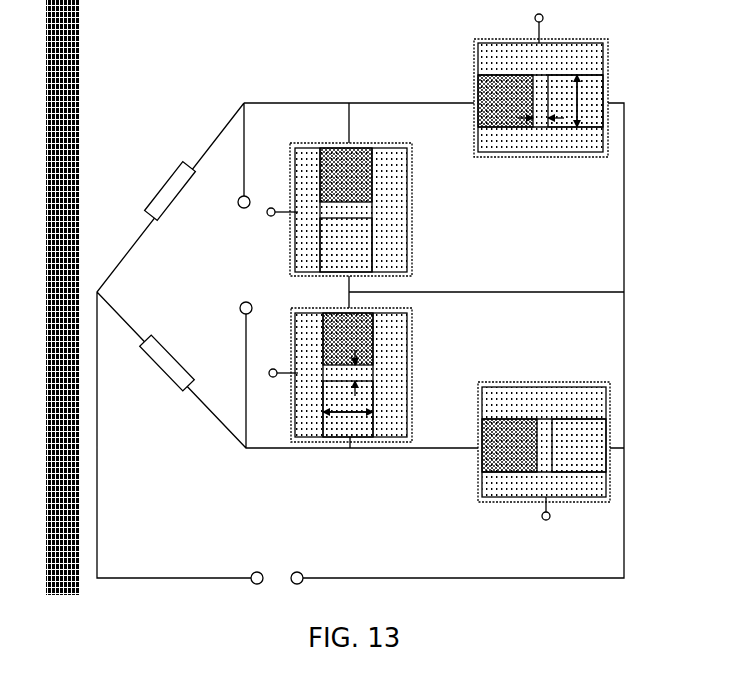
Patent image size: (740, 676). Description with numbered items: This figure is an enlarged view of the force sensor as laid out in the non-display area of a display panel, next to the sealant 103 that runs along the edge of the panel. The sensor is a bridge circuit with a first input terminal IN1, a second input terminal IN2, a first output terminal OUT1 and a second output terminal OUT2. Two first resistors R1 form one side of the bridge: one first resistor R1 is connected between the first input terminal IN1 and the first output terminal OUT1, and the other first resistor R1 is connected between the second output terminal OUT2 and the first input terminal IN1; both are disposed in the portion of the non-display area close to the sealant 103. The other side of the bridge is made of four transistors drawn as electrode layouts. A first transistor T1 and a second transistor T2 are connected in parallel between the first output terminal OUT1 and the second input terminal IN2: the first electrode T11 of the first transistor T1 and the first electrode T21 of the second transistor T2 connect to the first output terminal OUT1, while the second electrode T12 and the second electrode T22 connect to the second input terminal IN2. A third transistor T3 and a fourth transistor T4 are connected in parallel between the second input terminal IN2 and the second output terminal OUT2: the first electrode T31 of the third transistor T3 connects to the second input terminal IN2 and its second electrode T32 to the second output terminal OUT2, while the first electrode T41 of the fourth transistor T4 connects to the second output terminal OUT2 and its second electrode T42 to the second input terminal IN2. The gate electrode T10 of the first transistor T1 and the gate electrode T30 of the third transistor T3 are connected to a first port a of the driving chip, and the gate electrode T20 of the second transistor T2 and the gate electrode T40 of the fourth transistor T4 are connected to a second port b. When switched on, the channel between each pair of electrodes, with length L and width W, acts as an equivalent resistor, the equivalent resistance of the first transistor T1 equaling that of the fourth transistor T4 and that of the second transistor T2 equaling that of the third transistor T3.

The sealant 103 is at (64, 88).
The first resistor R1 is at (165, 277).
The first output terminal OUT1 is at (224, 211).
The second output terminal OUT2 is at (225, 300).
The first input terminal IN1 is at (240, 571).
The second input terminal IN2 is at (311, 571).
The first transistor T1 is at (542, 90).
The gate electrode of the first transistor T10 is at (541, 52).
The first electrode of the first transistor T11 is at (482, 84).
The second electrode of the first transistor T12 is at (596, 90).
The second transistor T2 is at (336, 214).
The gate electrode of the second transistor T20 is at (298, 206).
The first electrode of the second transistor T21 is at (368, 148).
The second electrode of the second transistor T22 is at (336, 275).
The third transistor T3 is at (338, 366).
The gate electrode of the third transistor T30 is at (281, 371).
The first electrode of the third transistor T31 is at (362, 313).
The second electrode of the third transistor T32 is at (326, 418).
The fourth transistor T4 is at (529, 443).
The gate electrode of the fourth transistor T40 is at (545, 394).
The first electrode of the fourth transistor T41 is at (486, 428).
The second electrode of the fourth transistor T42 is at (600, 470).